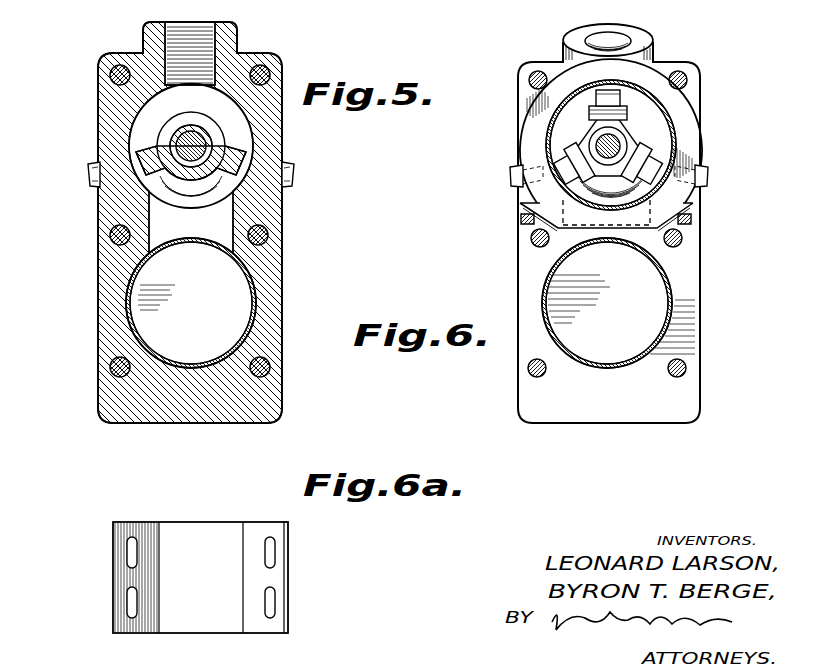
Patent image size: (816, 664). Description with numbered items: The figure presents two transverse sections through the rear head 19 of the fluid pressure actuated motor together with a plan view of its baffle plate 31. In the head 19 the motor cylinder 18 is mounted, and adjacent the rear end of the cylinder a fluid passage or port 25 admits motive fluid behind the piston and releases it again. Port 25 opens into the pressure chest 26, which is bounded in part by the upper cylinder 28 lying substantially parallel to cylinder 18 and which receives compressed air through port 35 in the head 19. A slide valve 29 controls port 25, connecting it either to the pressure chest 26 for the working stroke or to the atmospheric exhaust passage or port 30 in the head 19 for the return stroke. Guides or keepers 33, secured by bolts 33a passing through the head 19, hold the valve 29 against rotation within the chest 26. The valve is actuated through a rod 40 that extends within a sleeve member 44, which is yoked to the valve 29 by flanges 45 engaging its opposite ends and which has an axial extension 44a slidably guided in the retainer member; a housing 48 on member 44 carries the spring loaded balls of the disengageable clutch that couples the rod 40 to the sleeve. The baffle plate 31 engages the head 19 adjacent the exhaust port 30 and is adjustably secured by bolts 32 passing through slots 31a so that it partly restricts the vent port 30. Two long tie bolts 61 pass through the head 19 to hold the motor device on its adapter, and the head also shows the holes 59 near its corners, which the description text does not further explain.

In FIG. 5, the motor cylinder 18 is at (126, 303).
In FIG. 6, the motor cylinder 18 is at (672, 297).
In FIG. 5, the rear head 19 is at (268, 267).
In FIG. 6, the rear head 19 is at (685, 276).
In FIG. 5, the fluid passage or port 25 is at (189, 218).
In FIG. 5, the pressure chest 26 is at (237, 125).
In FIG. 6, the pressure chest 26 is at (563, 125).
In FIG. 6, the upper cylinder 28 is at (676, 118).
In FIG. 5, the slide valve 29 is at (165, 150).
In FIG. 6, the slide valve 29 is at (570, 191).
In FIG. 6, the exhaust passage or port 30 is at (672, 247).
In FIG. 6, the baffle plate 31 is at (606, 233).
In FIG. 6a, the baffle plate 31 is at (200, 577).
In FIG. 6a, the slots 31a is at (128, 597).
In FIG. 6, the bolts 32 is at (692, 219).
In FIG. 5, the guides or keepers 33 is at (138, 153).
In FIG. 5, the bolts 33a is at (92, 177).
In FIG. 6, the bolts 33a is at (511, 177).
In FIG. 5, the port 35 is at (200, 76).
In FIG. 6, the port 35 is at (626, 46).
In FIG. 5, the rod 40 is at (211, 139).
In FIG. 5, the sleeve member 44 is at (187, 118).
In FIG. 6, the axial extension 44a is at (599, 143).
In FIG. 5, the flanges 45 is at (207, 118).
In FIG. 6, the housing 48 is at (619, 98).
In FIG. 5, the mounting holes 59 is at (110, 68).
In FIG. 6, the mounting holes 59 is at (535, 72).
In FIG. 5, the tie bolts 61 is at (110, 237).
In FIG. 6, the tie bolts 61 is at (531, 242).